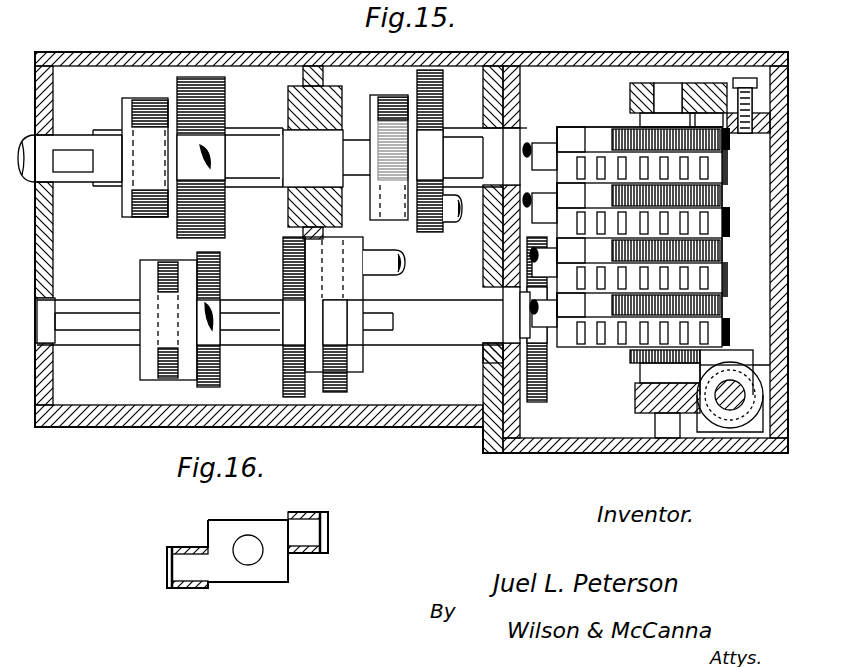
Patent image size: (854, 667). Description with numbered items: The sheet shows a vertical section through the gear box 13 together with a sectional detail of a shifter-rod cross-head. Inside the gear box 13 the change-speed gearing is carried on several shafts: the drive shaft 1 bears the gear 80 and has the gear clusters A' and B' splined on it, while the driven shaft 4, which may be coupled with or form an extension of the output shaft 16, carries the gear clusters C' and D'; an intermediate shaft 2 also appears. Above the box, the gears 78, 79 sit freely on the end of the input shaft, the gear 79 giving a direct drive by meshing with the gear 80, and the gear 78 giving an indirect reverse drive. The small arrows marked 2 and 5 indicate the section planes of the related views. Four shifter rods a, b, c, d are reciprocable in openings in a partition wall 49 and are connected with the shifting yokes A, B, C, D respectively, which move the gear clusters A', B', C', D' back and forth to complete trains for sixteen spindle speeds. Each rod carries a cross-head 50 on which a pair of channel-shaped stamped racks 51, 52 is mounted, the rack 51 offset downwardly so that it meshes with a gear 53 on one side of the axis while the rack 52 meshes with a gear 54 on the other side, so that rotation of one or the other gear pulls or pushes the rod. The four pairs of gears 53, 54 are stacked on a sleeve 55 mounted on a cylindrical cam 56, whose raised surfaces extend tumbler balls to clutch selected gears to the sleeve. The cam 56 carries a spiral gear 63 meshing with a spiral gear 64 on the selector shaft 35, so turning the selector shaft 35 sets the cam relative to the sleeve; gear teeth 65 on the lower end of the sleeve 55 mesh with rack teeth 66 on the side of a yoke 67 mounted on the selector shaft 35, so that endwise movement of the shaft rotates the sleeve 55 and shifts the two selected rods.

In FIG. 15, the gear box 13 is at (568, 52).
In FIG. 15, the output shaft 16 is at (50, 150).
In FIG. 15, the driven shaft 4 is at (73, 165).
In FIG. 15, the drive shaft 1 is at (70, 305).
In FIG. 15, the partition wall 49 is at (490, 362).
In FIG. 15, the gear 80 is at (540, 400).
In FIG. 15, the rack 51 is at (725, 200).
In FIG. 16, the rack 51 is at (170, 587).
In FIG. 15, the gear 53 is at (725, 180).
In FIG. 15, the gear 54 is at (728, 150).
In FIG. 15, the sleeve 55 is at (683, 115).
In FIG. 15, the cylindrical cam 56 is at (660, 95).
In FIG. 15, the gear teeth 65 is at (630, 355).
In FIG. 15, the rack teeth 66 is at (700, 372).
In FIG. 15, the spiral gear 63 is at (635, 397).
In FIG. 15, the yoke 67 is at (728, 350).
In FIG. 15, the spiral gear 64 is at (752, 420).
In FIG. 15, the selector shaft 35 is at (728, 405).
In FIG. 15, the gear 78 is at (83, 0).
In FIG. 15, the gear 79 is at (292, 0).
In FIG. 15, the intermediate shaft 2 is at (50, 15).
In FIG. 15, the direction arrow 5 is at (255, 15).
In FIG. 16, the cross-head 50 is at (262, 522).
In FIG. 16, the rack 52 is at (326, 530).
In FIG. 15, the shifting yoke D is at (145, 157).
In FIG. 15, the gear cluster D' is at (230, 157).
In FIG. 15, the shifting yoke C is at (389, 157).
In FIG. 15, the gear cluster C' is at (460, 151).
In FIG. 15, the shifting yoke A is at (168, 320).
In FIG. 15, the gear cluster A' is at (240, 319).
In FIG. 15, the shifting yoke B is at (344, 317).
In FIG. 15, the gear cluster B' is at (413, 347).
In FIG. 15, the shifter rod a is at (543, 313).
In FIG. 15, the shifter rod b is at (543, 262).
In FIG. 15, the shifter rod c is at (540, 208).
In FIG. 15, the shifter rod d is at (530, 149).
In FIG. 16, the shifter rod d is at (250, 560).